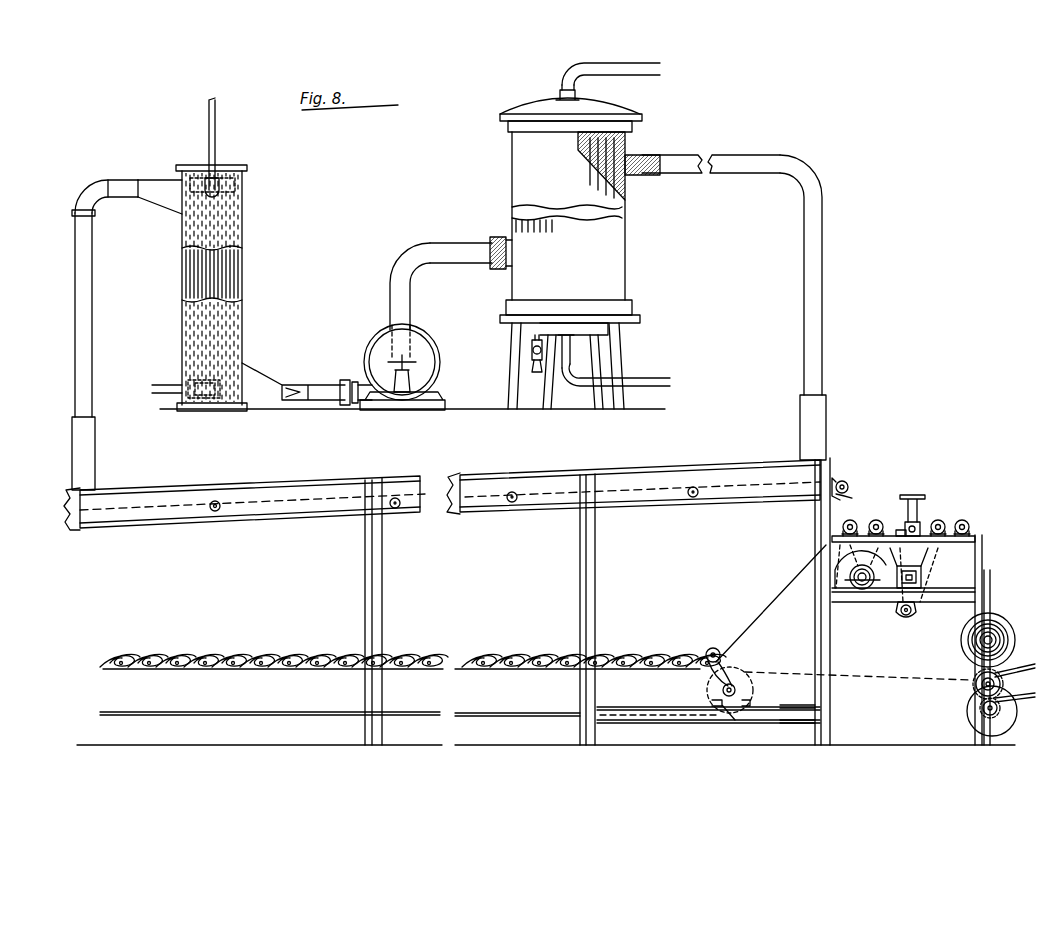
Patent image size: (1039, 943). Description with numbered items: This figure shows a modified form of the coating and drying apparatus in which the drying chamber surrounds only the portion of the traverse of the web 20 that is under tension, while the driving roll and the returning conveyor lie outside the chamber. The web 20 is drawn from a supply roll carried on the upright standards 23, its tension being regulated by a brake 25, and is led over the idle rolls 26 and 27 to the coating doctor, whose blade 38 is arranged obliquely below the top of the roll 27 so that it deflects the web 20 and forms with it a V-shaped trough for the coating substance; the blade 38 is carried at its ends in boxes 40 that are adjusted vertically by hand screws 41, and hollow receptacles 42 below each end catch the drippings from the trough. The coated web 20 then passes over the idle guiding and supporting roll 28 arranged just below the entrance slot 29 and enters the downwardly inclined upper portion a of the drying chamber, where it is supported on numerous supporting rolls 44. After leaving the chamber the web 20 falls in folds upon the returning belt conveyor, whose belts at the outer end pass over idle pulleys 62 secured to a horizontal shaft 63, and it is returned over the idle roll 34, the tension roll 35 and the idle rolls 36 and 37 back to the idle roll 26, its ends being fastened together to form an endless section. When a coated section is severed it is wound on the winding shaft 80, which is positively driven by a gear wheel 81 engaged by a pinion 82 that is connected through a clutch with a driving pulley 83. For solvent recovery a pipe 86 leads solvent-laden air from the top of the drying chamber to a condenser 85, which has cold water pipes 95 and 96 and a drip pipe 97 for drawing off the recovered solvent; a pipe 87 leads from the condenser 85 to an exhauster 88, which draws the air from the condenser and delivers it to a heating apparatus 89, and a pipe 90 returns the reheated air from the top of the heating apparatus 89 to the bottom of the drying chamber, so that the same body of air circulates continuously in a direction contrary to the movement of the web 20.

The pipe 90 is at (117, 185).
The heating apparatus 89 is at (222, 280).
The exhauster 88 is at (382, 340).
The pipe 87 is at (453, 246).
The condenser 85 is at (618, 238).
The pipe 86 is at (722, 160).
The cold water pipe 95 is at (605, 62).
The cold water pipe 96 is at (650, 378).
The drip pipe 97 is at (532, 355).
The web 20 is at (326, 495).
The supporting roll 44 is at (217, 512).
The upper elongated portion a is at (535, 505).
The idle pulley 62 is at (745, 682).
The horizontal shaft 63 is at (724, 690).
The entrance slot 29 is at (845, 478).
The idle guiding and supporting roll 28 is at (850, 492).
The idle roll 34 is at (853, 520).
The idle roll 36 is at (878, 520).
The box 40 is at (894, 522).
The hand screw 41 is at (917, 494).
The blade 38 is at (920, 520).
The idle roll 27 is at (941, 520).
The idle roll 26 is at (966, 521).
The upright standard 23 is at (984, 542).
The hollow receptacle 42 is at (922, 570).
The tension roll 35 is at (870, 603).
The idle roll 37 is at (910, 615).
The brake 25 is at (966, 640).
The driving pulley 83 is at (975, 680).
The pinion 82 is at (1000, 682).
The gear wheel 81 is at (980, 706).
The winding shaft 80 is at (972, 718).